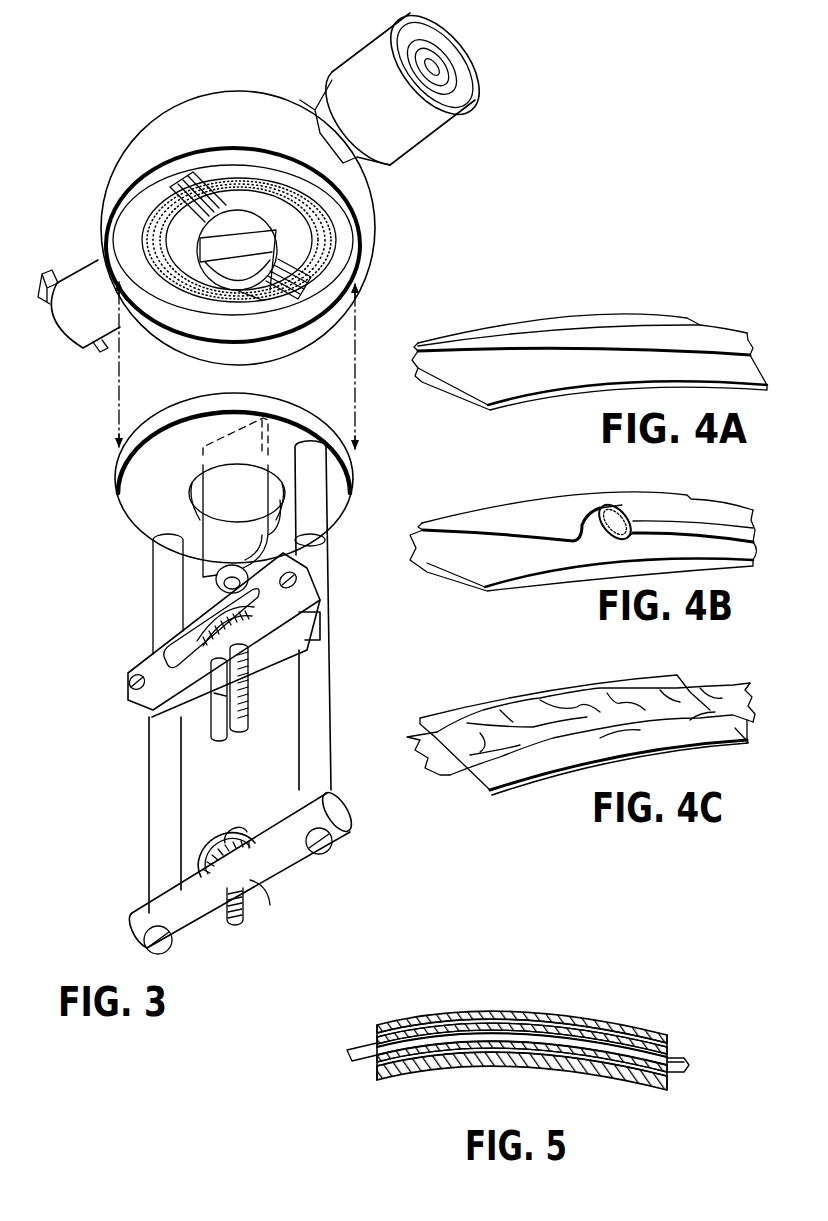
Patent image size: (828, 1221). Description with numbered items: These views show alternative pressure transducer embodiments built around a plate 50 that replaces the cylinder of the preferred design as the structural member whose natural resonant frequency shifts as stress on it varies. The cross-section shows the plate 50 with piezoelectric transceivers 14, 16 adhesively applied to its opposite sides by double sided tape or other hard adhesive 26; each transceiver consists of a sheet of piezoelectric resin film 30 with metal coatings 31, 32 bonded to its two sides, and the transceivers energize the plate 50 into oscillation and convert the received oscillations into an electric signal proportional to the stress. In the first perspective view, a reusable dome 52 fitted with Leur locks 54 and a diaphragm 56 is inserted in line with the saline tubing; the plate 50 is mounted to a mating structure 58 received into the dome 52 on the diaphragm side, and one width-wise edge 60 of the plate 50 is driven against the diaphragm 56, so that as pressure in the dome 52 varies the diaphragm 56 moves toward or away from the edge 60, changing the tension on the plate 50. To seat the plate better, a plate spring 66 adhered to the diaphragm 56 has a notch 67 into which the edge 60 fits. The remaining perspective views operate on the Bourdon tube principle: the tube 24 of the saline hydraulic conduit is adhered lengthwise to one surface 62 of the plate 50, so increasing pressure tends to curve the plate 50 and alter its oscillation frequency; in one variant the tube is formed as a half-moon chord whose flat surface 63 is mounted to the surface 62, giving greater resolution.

In FIG. 5, the piezoelectric transceiver 14 is at (630, 1024).
In FIG. 5, the piezoelectric transceiver 16 is at (634, 1093).
In FIG. 4A, the tube 24 is at (597, 336).
In FIG. 4B, the tube 24 is at (525, 522).
In FIG. 4C, the tube 24 is at (556, 708).
In FIG. 5, the adhesive 26 is at (368, 1060).
In FIG. 5, the piezoelectric resin film 30 is at (445, 1027).
In FIG. 5, the metal coating 31 is at (414, 1048).
In FIG. 5, the metal coating 32 is at (483, 1018).
In FIG. 3, the plate 50 is at (229, 508).
In FIG. 4A, the plate 50 is at (508, 408).
In FIG. 4B, the plate 50 is at (474, 585).
In FIG. 4C, the plate 50 is at (521, 784).
In FIG. 5, the plate 50 is at (694, 1063).
In FIG. 3, the reusable dome 52 is at (143, 102).
In FIG. 3, the Leur locks 54 is at (366, 68).
In FIG. 3, the diaphragm 56 is at (150, 230).
In FIG. 3, the mating structure 58 is at (114, 522).
In FIG. 3, the width-wise edge 60 is at (237, 432).
In FIG. 4A, the surface 62 is at (610, 377).
In FIG. 4B, the surface 62 is at (568, 558).
In FIG. 4C, the surface 62 is at (668, 738).
In FIG. 4B, the flat surface 63 is at (603, 537).
In FIG. 3, the plate spring 66 is at (232, 180).
In FIG. 3, the notch 67 is at (273, 234).